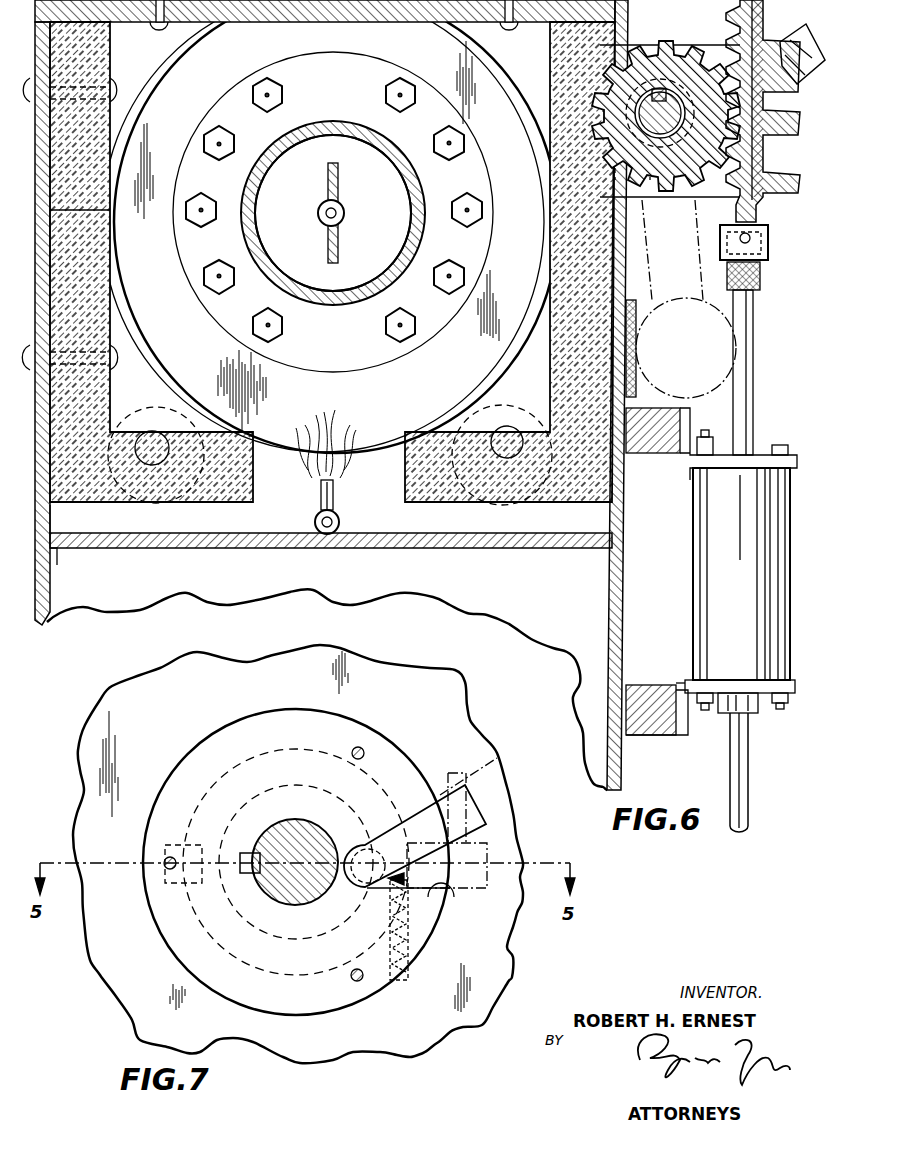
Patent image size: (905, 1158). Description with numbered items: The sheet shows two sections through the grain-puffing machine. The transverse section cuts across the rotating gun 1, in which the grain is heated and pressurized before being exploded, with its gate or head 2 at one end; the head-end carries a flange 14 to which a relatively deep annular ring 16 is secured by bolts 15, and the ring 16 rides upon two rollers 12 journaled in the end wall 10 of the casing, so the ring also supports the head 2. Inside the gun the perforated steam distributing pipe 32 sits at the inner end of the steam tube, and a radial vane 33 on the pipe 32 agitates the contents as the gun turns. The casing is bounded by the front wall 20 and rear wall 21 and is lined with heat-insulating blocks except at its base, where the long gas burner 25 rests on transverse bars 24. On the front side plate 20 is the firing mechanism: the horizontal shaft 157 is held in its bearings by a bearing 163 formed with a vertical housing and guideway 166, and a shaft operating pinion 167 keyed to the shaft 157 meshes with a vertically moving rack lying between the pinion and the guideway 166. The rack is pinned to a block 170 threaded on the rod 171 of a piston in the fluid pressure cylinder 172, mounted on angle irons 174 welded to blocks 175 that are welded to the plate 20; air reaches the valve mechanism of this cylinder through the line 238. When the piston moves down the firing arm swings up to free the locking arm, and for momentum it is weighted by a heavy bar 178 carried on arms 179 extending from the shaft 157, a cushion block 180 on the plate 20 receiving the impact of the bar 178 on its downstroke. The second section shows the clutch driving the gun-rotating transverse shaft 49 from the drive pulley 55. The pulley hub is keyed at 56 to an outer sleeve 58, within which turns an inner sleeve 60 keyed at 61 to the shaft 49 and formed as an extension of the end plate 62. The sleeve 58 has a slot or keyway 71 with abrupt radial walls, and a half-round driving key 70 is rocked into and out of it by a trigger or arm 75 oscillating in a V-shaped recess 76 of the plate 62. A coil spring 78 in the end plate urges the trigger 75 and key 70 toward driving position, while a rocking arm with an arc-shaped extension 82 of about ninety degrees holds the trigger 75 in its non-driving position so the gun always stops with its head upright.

In FIG. 6, the rotating gun 1 is at (410, 186).
In FIG. 6, the gate or head 2 is at (367, 163).
In FIG. 6, the end wall 10 is at (553, 522).
In FIG. 6, the rollers 12 is at (173, 398).
In FIG. 6, the flange 14 is at (482, 186).
In FIG. 6, the bolts 15 is at (283, 85).
In FIG. 6, the annular ring 16 is at (500, 73).
In FIG. 6, the front wall 20 is at (624, 638).
In FIG. 6, the rear wall 21 is at (50, 520).
In FIG. 6, the transverse bars 24 is at (423, 542).
In FIG. 6, the gas burner 25 is at (338, 522).
In FIG. 6, the steam distributing pipe 32 is at (345, 214).
In FIG. 6, the radial vane 33 is at (328, 173).
In FIG. 6, the horizontal shaft 157 is at (658, 200).
In FIG. 6, the bearing 163 is at (640, 37).
In FIG. 6, the guideway 166 is at (780, 149).
In FIG. 6, the shaft operating pinion 167 is at (690, 56).
In FIG. 6, the block 170 is at (768, 242).
In FIG. 6, the rod 171 is at (754, 358).
In FIG. 6, the fluid pressure cylinder 172 is at (718, 513).
In FIG. 6, the angle irons 174 is at (686, 728).
In FIG. 6, the blocks 175 is at (674, 668).
In FIG. 6, the heavy bar 178 is at (736, 312).
In FIG. 6, the arms 179 is at (797, 38).
In FIG. 6, the cushion block 180 is at (651, 300).
In FIG. 6, the line 238 is at (749, 762).
In FIG. 7, the transverse shaft 49 is at (300, 828).
In FIG. 7, the drive pulley 55 is at (475, 733).
In FIG. 7, the key 56 is at (185, 832).
In FIG. 7, the outer sleeve 58 is at (240, 772).
In FIG. 7, the inner sleeve 60 is at (300, 790).
In FIG. 7, the key 61 is at (250, 853).
In FIG. 7, the end plate 62 is at (403, 772).
In FIG. 7, the driving key 70 is at (370, 855).
In FIG. 7, the slot or keyway 71 is at (380, 835).
In FIG. 7, the trigger or arm 75 is at (466, 812).
In FIG. 7, the V-shaped recess 76 is at (452, 888).
In FIG. 7, the coil spring 78 is at (390, 899).
In FIG. 7, the arc-shaped extension 82 is at (480, 770).